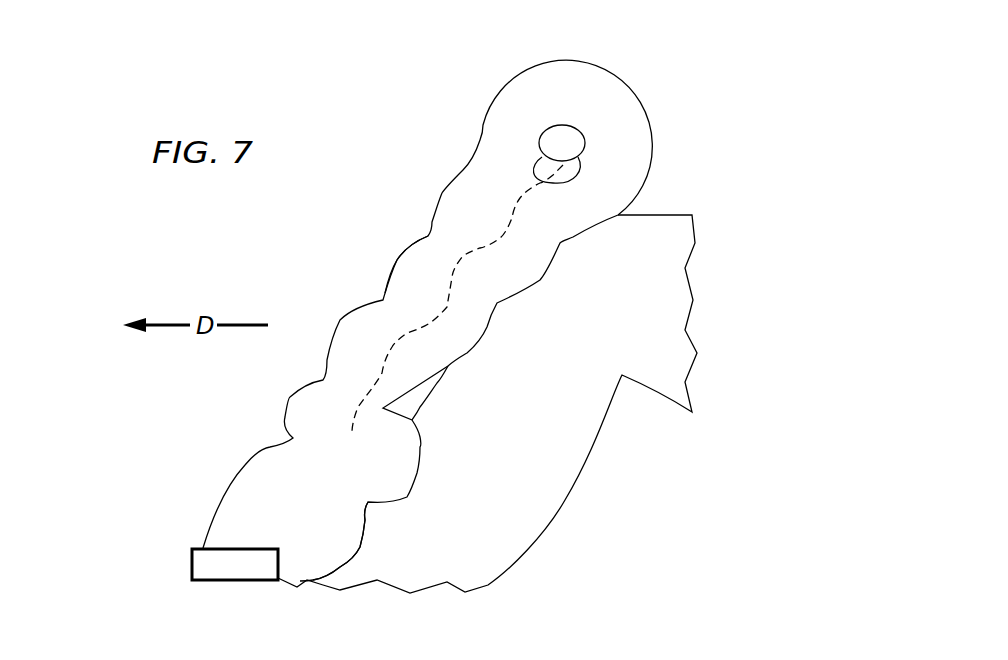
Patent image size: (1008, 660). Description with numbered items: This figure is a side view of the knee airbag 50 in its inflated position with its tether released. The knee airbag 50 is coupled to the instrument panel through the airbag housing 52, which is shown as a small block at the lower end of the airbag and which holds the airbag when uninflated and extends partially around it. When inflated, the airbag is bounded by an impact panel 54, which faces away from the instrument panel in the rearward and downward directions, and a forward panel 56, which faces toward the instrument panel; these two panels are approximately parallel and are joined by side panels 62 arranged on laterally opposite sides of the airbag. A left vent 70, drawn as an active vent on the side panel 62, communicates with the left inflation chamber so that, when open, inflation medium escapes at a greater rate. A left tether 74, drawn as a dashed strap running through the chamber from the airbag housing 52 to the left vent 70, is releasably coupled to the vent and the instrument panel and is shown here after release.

The knee airbag 50 is at (637, 95).
The airbag housing 52 is at (190, 560).
The impact panel 54 is at (528, 293).
The forward panel 56 is at (397, 260).
The side panels 62 is at (317, 533).
The left vent 70 is at (563, 125).
The left tether 74 is at (478, 245).